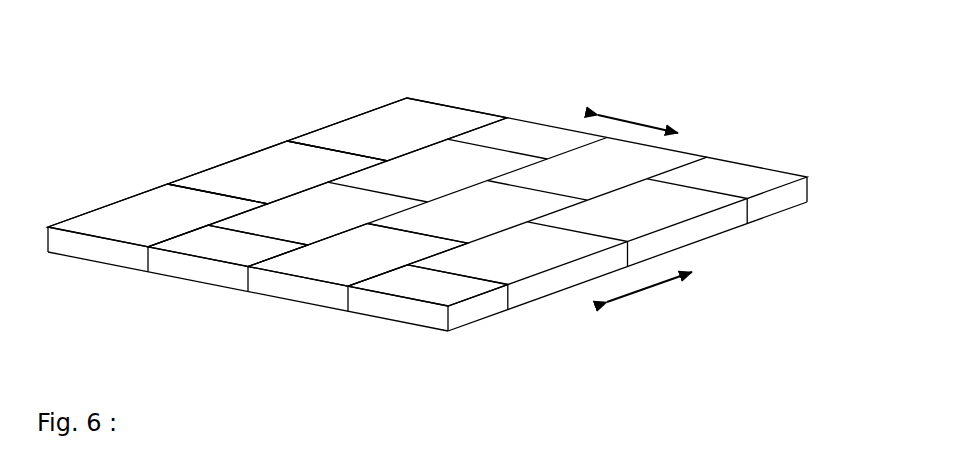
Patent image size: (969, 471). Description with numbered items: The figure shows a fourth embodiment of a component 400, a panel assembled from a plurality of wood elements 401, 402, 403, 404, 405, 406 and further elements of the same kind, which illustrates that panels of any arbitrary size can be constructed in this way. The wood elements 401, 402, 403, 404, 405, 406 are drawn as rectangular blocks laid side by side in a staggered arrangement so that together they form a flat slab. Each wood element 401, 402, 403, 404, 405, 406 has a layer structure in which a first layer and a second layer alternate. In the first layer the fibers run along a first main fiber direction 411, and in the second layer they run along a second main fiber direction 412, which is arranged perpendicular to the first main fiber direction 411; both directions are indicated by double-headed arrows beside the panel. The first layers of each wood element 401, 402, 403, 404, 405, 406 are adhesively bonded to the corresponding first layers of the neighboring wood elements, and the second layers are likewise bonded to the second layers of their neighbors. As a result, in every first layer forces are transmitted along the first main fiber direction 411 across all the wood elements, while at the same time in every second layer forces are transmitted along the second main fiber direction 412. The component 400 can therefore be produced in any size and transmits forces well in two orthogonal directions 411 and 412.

The component 400 is at (582, 46).
The wood element 401 is at (135, 207).
The wood element 402 is at (243, 182).
The wood element 403 is at (355, 143).
The wood element 404 is at (203, 270).
The wood element 405 is at (323, 298).
The wood element 406 is at (435, 323).
The first main fiber direction 411 is at (660, 285).
The second main fiber direction 412 is at (648, 123).